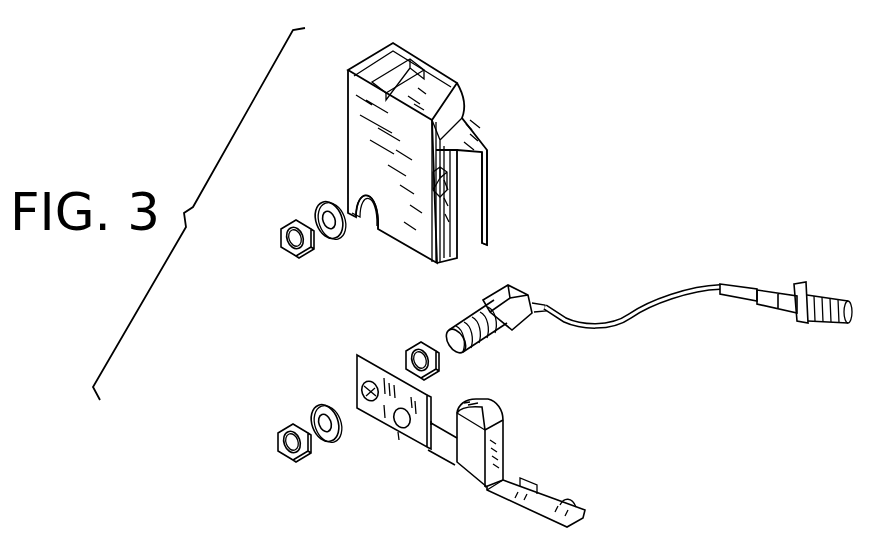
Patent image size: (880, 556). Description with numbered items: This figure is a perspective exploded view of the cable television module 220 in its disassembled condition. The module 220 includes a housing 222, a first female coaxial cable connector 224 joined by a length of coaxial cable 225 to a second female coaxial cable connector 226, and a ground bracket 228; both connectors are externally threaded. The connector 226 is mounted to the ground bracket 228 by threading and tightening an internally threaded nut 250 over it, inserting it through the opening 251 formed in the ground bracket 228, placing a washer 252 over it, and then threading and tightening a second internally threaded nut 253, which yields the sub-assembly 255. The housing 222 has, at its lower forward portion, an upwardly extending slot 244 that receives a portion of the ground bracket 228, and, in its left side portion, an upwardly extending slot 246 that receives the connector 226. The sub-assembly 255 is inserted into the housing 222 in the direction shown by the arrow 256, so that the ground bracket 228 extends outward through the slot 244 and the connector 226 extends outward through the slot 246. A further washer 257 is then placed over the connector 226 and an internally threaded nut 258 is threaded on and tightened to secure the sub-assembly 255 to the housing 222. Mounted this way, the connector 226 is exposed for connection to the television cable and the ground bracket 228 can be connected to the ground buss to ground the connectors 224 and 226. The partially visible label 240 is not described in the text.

The cable television module 220 is at (494, 135).
The housing 222 is at (372, 54).
The first female coaxial cable connector 224 is at (823, 322).
The coaxial cable 225 is at (646, 302).
The second female coaxial cable connector 226 is at (496, 344).
The ground bracket 228 is at (507, 457).
The base 240 is at (215, 549).
The slot 244 is at (473, 234).
The slot 246 is at (373, 214).
The internally threaded nut 250 is at (438, 376).
The opening 251 is at (357, 392).
The washer 252 is at (338, 442).
The internally threaded nut 253 is at (279, 432).
The sub-assembly 255 is at (468, 476).
The arrow 256 is at (372, 352).
The washer 257 is at (328, 200).
The internally threaded nut 258 is at (290, 218).